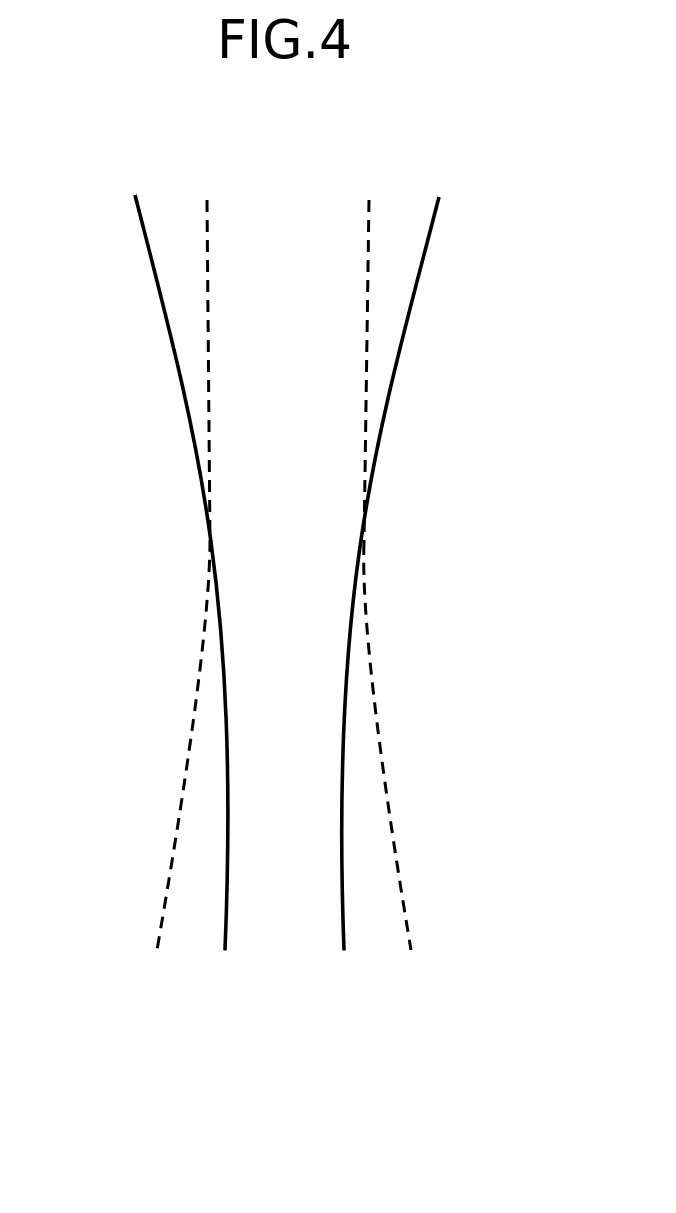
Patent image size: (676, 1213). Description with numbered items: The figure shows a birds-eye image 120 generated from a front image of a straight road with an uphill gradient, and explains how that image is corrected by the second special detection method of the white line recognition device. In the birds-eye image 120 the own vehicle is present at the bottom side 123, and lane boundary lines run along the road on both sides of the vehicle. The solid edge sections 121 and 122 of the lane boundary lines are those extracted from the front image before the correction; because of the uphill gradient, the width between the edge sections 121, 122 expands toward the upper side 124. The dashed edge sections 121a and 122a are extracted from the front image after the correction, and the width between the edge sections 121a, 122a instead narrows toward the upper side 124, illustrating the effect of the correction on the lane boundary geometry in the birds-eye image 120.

The birds-eye image 120 is at (453, 151).
The edge section of lane boundary line 121 is at (181, 383).
The edge section of lane boundary line 122 is at (392, 383).
The edge section of lane boundary line 121a is at (193, 720).
The edge section of lane boundary line 122a is at (376, 718).
The bottom side 123 is at (289, 950).
The upper side 124 is at (292, 210).